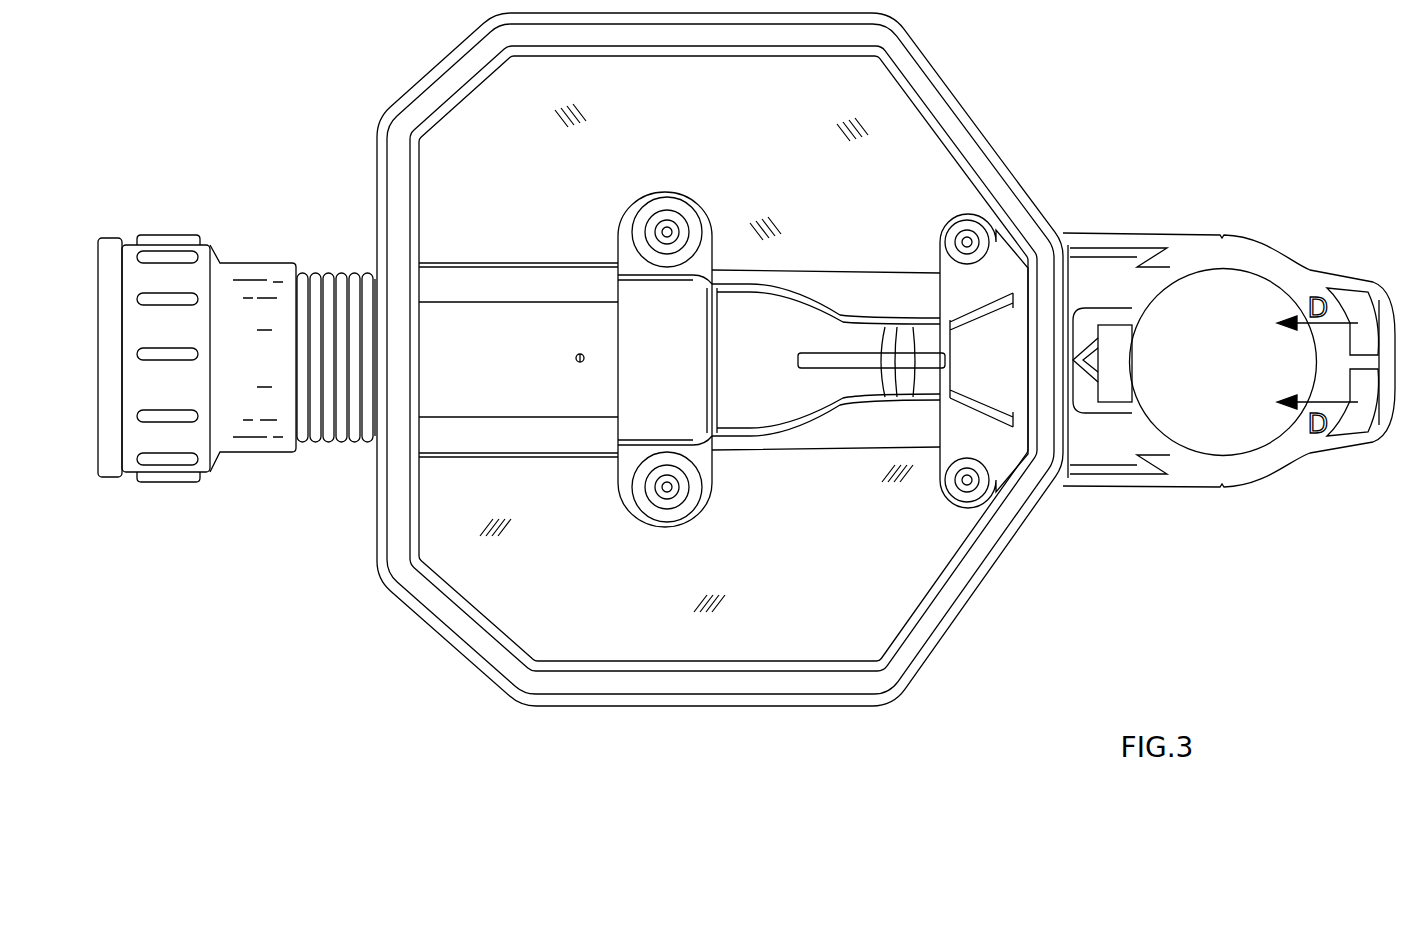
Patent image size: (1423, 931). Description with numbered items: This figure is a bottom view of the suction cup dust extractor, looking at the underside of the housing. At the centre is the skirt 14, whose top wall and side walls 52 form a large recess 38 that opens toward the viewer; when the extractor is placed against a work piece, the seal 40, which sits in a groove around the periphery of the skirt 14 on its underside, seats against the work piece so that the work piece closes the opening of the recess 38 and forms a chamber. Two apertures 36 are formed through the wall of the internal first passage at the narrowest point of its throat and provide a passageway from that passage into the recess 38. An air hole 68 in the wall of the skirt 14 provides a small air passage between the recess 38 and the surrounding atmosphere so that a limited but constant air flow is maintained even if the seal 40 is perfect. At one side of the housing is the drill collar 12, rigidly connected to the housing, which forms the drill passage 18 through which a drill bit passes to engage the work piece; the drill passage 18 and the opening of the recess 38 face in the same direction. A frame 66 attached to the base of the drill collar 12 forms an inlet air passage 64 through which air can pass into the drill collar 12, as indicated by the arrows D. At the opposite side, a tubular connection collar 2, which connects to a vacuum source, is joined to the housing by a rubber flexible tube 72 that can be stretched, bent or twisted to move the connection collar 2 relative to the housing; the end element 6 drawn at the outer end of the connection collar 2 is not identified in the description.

The connection collar 2 is at (130, 478).
The cap end plate 6 is at (108, 478).
The drill collar 12 is at (1240, 478).
The skirt 14 is at (651, 131).
The drill passage 18 is at (1174, 353).
The apertures 36 is at (892, 342).
The recess 38 is at (497, 210).
The seal 40 is at (436, 93).
The side walls 52 is at (383, 138).
The inlet air passage 64 is at (1347, 303).
The frame 66 is at (1375, 303).
The air hole 68 is at (577, 353).
The flexible tube 72 is at (324, 432).